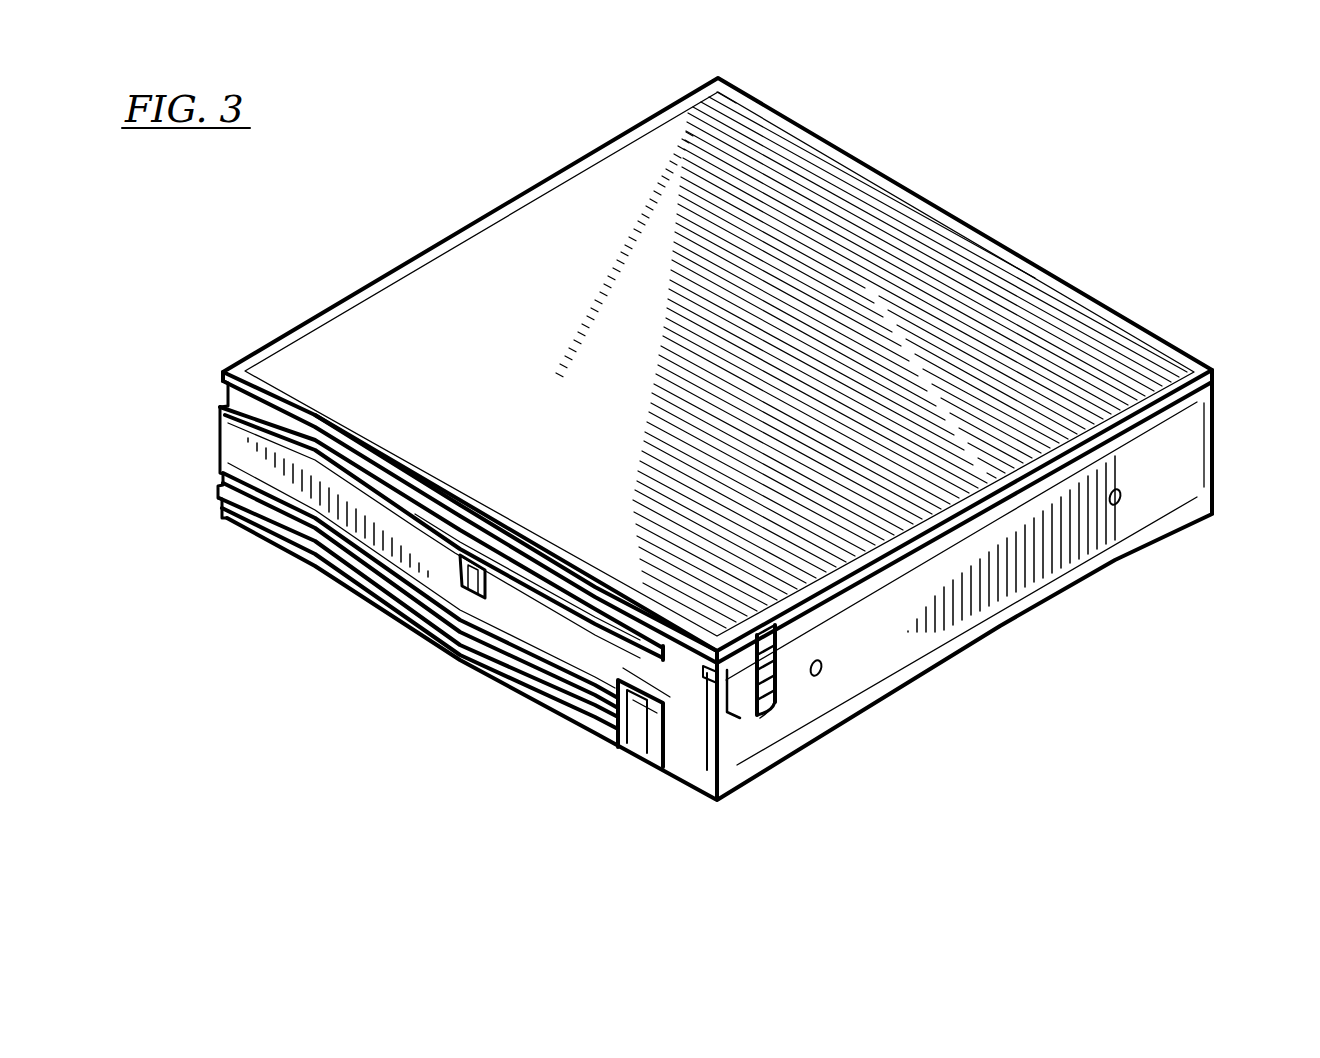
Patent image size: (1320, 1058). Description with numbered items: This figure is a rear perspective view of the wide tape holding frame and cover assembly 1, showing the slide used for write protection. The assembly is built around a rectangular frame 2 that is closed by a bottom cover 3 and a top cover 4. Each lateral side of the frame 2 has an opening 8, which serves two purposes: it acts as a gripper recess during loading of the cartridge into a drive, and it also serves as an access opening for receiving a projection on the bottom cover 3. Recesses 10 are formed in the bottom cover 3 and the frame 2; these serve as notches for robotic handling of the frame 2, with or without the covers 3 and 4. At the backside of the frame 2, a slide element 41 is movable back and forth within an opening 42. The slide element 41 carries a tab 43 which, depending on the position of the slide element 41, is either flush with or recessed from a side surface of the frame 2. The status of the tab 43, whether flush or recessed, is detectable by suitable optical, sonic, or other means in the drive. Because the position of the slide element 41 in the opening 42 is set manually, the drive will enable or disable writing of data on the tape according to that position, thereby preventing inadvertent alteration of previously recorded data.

The wide tape holding frame and cover assembly 1 is at (1013, 168).
The rectangular frame 2 is at (1183, 442).
The bottom cover 3 is at (997, 640).
The top cover 4 is at (485, 257).
The opening 8 is at (462, 553).
The recess 10 is at (637, 720).
The slide element 41 is at (737, 713).
The opening 42 is at (786, 687).
The tab 43 is at (713, 670).